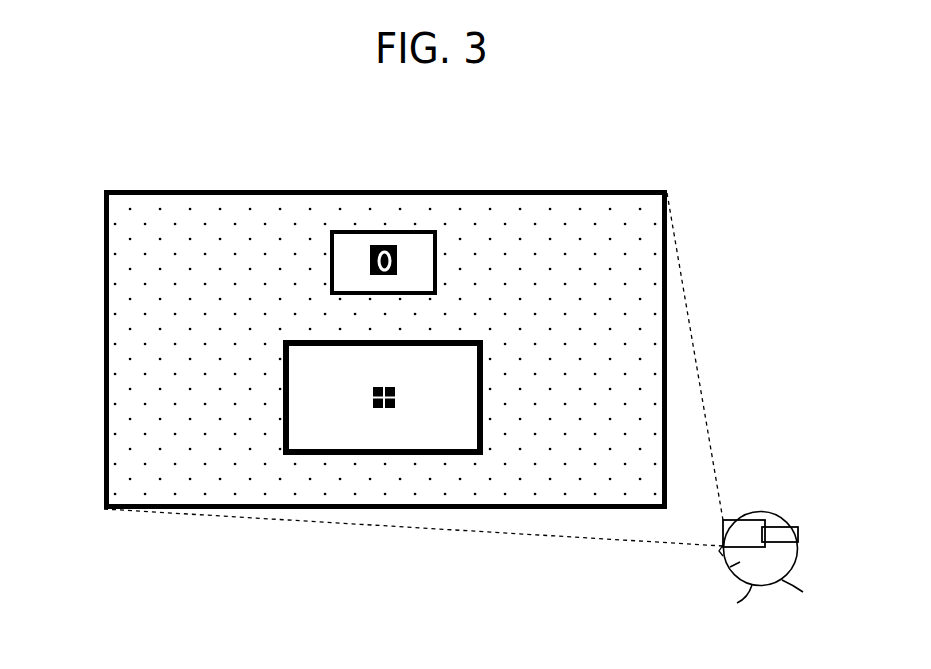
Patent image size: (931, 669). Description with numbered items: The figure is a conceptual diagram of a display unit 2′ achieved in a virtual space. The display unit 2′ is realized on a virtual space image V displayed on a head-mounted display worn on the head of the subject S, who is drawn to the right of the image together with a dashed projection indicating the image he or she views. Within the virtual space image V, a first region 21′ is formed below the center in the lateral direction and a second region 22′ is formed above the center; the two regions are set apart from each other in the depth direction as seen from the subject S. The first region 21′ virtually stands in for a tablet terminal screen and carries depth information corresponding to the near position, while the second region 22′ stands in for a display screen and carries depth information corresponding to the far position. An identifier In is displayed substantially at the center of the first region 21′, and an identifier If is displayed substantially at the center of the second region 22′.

The virtual display area V is at (130, 191).
The second region 22′ is at (403, 230).
The identifier If is at (373, 246).
The first region 21′ is at (283, 388).
The identifier In is at (373, 397).
The display unit 2′ is at (733, 520).
The subject S is at (786, 519).